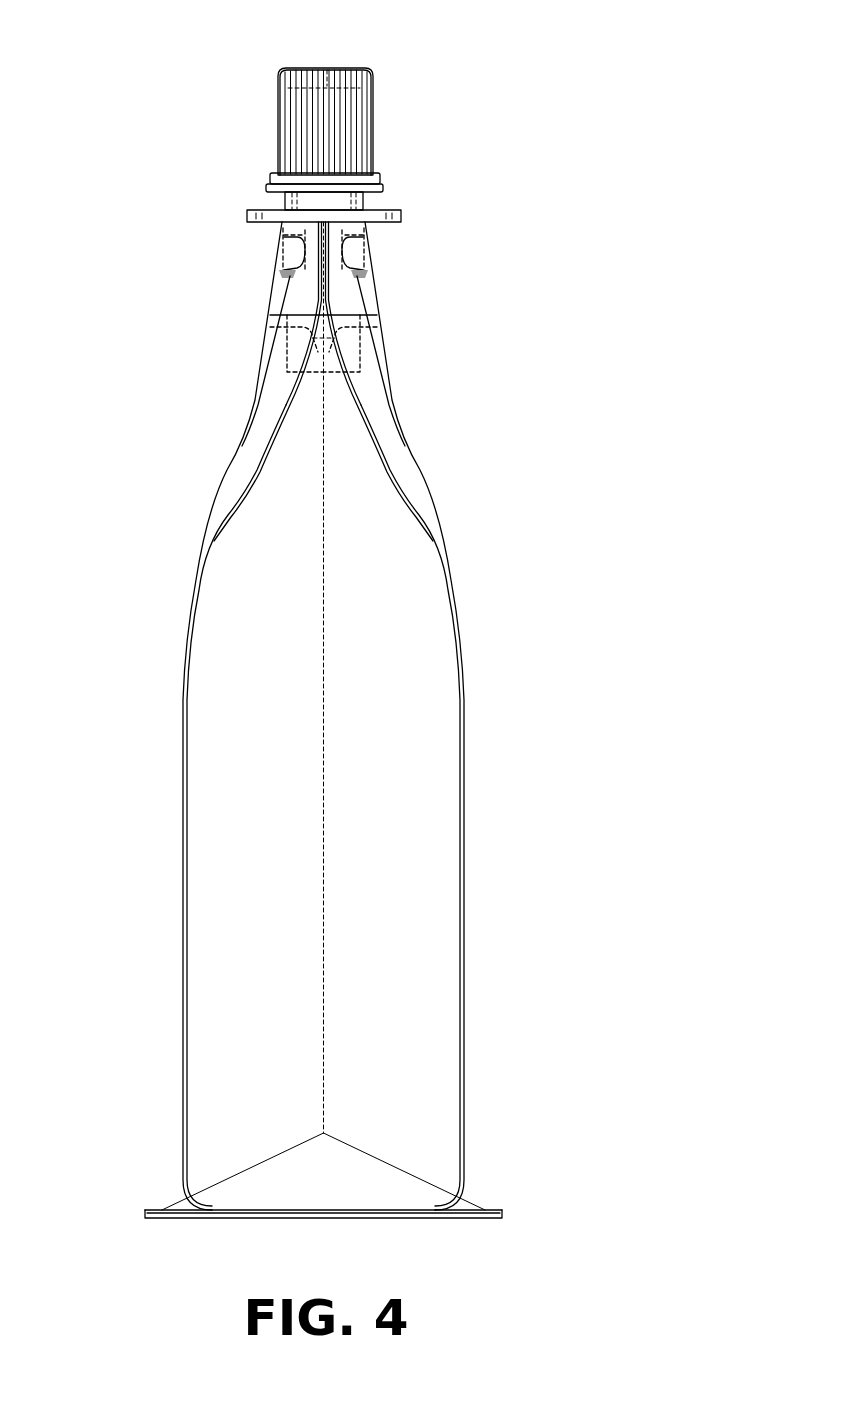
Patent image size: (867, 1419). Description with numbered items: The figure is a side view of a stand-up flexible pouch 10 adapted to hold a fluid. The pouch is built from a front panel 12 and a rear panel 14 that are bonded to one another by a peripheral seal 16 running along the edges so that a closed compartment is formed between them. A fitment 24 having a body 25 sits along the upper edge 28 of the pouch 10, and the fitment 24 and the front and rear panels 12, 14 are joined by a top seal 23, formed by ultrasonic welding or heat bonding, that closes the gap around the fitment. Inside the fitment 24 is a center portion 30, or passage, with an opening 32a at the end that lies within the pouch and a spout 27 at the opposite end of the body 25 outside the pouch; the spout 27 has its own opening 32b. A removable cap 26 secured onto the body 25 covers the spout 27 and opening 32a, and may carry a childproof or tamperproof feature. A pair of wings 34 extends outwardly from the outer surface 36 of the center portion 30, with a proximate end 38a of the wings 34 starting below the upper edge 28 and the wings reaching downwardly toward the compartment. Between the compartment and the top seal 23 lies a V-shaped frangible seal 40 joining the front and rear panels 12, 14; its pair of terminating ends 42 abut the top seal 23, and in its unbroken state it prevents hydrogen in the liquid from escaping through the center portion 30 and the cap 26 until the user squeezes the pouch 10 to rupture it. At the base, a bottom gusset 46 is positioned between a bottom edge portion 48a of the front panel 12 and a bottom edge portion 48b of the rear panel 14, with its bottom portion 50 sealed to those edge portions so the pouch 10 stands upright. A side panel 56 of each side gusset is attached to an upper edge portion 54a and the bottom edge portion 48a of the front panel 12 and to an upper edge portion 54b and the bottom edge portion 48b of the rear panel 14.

The flexible pouch 10 is at (590, 85).
The front panel 12 is at (228, 464).
The rear panel 14 is at (428, 467).
The peripheral seal 16 is at (183, 757).
The top seal 23 is at (290, 252).
The fitment 24 is at (172, 112).
The body 25 is at (268, 140).
The cap 26 is at (372, 66).
The spout 27 is at (375, 112).
The upper edge 28 is at (362, 226).
The center portion 30 is at (362, 345).
The opening 32a is at (330, 68).
The opening 32b is at (326, 382).
The pair of wings 34 is at (268, 308).
The outer surface 36 is at (362, 365).
The proximate end 38a is at (284, 270).
The frangible seal 40 is at (242, 376).
The terminating ends 42 is at (283, 274).
The bottom gusset 46 is at (172, 1232).
The bottom edge portion 48a is at (150, 1208).
The bottom edge portion 48b is at (497, 1208).
The bottom portion 50 is at (330, 1220).
The upper edge portion 54a is at (285, 322).
The upper edge portion 54b is at (362, 322).
The side panel 56 is at (430, 1000).